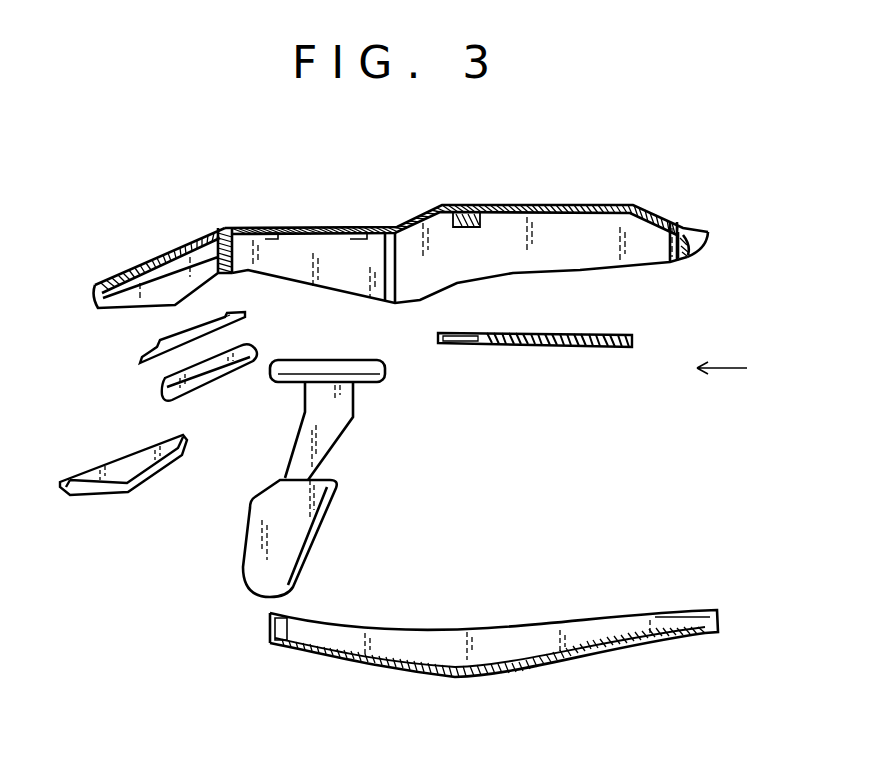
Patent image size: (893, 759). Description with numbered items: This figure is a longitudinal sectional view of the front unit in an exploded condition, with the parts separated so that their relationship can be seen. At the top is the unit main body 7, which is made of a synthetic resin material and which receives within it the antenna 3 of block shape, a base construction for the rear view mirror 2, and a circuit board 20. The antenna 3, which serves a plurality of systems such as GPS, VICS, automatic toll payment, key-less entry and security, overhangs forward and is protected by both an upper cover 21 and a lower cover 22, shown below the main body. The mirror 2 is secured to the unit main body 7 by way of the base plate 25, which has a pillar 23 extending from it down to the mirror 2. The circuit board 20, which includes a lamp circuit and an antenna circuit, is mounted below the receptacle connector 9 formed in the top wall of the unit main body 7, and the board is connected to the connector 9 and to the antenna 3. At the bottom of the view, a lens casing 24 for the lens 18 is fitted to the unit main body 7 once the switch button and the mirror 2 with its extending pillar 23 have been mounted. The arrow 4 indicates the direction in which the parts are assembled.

The rear view mirror 2 is at (322, 541).
The antenna 3 is at (202, 387).
The assembly direction 4 is at (739, 372).
The unit main body 7 is at (401, 223).
The receptacle connector 9 is at (467, 212).
The lens 18 is at (485, 678).
The circuit board 20 is at (557, 347).
The upper cover 21 is at (140, 361).
The lower cover 22 is at (87, 495).
The pillar 23 is at (338, 445).
The lens casing 24 is at (494, 644).
The base plate 25 is at (367, 383).